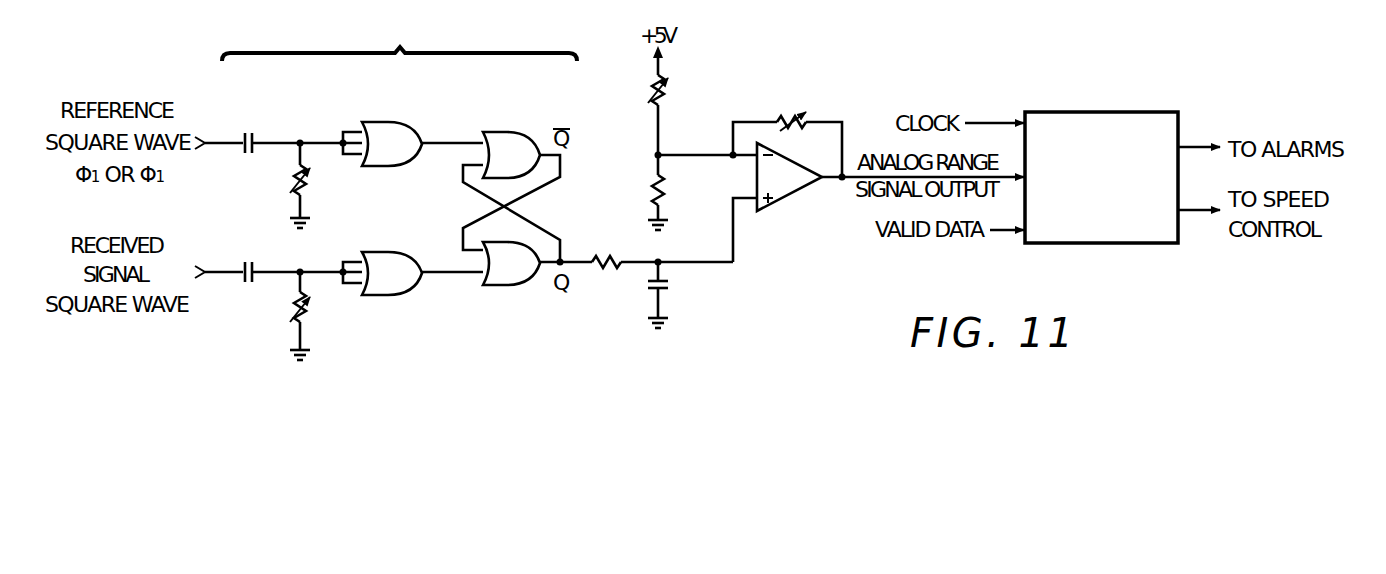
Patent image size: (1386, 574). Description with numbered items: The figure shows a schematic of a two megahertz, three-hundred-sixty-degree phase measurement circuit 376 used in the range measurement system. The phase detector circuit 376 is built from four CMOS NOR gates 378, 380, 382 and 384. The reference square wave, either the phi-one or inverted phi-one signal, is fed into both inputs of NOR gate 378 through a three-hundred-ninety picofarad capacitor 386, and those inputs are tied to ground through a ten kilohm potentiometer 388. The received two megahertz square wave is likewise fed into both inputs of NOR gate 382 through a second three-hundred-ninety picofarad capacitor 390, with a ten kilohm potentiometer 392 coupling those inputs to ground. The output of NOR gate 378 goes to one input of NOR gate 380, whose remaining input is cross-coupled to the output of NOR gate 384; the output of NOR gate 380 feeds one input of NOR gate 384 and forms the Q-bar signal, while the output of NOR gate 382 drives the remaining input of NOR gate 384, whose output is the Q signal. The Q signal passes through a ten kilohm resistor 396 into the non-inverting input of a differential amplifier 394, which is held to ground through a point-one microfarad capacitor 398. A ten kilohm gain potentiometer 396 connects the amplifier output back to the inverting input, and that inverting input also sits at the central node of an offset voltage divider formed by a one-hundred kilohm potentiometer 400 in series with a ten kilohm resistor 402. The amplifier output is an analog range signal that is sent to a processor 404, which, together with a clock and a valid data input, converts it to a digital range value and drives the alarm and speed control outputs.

The phase detector circuit 376 is at (182, 48).
The NOR gate 378 is at (392, 121).
The NOR gate 380 is at (509, 131).
The NOR gate 382 is at (407, 296).
The NOR gate 384 is at (527, 285).
The capacitor 386 is at (247, 160).
The potentiometer 388 is at (316, 189).
The second capacitor 390 is at (247, 291).
The potentiometer 392 is at (313, 319).
The differential amplifier 394 is at (790, 208).
The resistor 396 is at (605, 272).
The capacitor 398 is at (668, 298).
The potentiometer 400 is at (648, 86).
The resistor 402 is at (650, 187).
The processor 404 is at (1124, 217).